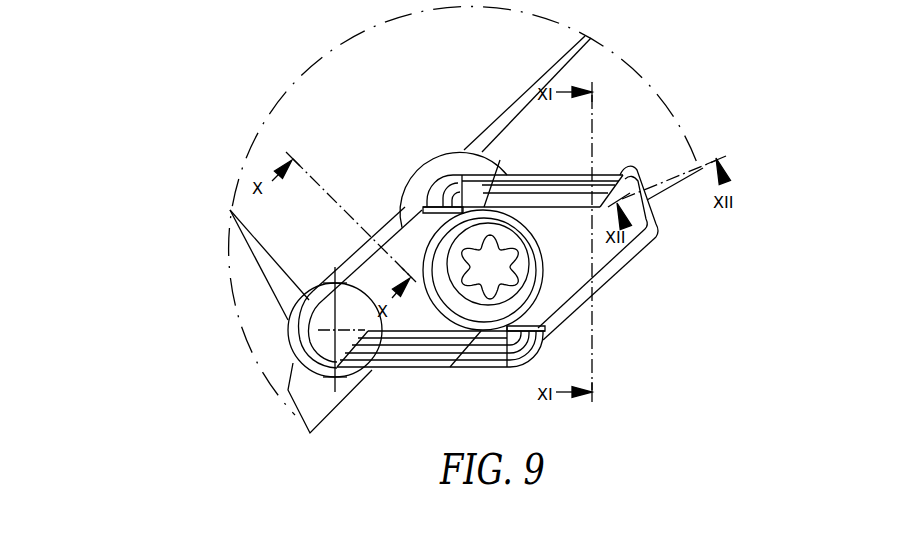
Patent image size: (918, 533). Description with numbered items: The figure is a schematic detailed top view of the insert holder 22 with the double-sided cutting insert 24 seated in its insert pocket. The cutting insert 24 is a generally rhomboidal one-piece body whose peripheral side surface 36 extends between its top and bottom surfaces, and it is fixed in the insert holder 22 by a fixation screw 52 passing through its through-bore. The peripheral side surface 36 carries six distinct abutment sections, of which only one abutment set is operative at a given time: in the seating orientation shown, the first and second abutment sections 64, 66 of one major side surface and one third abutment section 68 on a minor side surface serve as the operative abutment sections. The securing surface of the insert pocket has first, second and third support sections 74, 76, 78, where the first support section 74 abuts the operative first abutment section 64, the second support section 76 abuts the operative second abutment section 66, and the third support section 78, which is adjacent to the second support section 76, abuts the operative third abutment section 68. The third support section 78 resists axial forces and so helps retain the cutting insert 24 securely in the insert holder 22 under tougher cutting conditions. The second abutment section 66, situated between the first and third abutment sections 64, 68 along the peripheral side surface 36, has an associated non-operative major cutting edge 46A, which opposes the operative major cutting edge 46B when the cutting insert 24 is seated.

The insert holder 22 is at (252, 75).
The cutting insert 24 is at (453, 279).
The peripheral side surface 36 is at (609, 268).
The non-operative major cutting edge 46A is at (592, 207).
The operative major cutting edge 46B is at (391, 370).
The fixation screw 52 is at (481, 268).
The first abutment section 64 is at (382, 247).
The second abutment section 66 is at (622, 173).
The third abutment section 68 is at (650, 187).
The first support section 74 is at (288, 325).
The second support section 76 is at (605, 162).
The third support section 78 is at (630, 188).